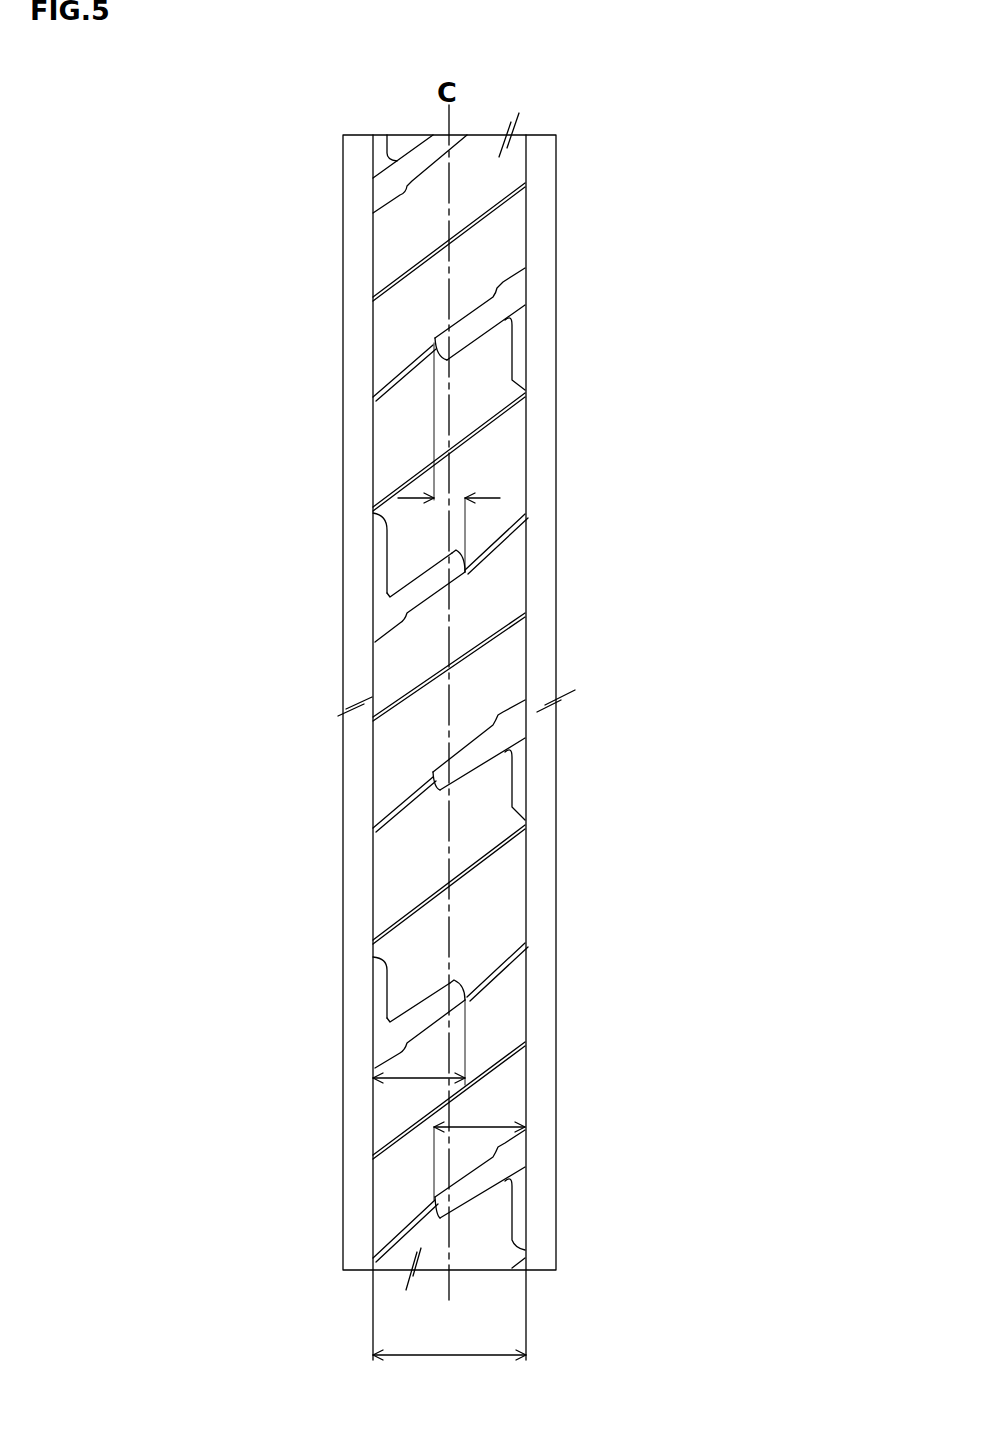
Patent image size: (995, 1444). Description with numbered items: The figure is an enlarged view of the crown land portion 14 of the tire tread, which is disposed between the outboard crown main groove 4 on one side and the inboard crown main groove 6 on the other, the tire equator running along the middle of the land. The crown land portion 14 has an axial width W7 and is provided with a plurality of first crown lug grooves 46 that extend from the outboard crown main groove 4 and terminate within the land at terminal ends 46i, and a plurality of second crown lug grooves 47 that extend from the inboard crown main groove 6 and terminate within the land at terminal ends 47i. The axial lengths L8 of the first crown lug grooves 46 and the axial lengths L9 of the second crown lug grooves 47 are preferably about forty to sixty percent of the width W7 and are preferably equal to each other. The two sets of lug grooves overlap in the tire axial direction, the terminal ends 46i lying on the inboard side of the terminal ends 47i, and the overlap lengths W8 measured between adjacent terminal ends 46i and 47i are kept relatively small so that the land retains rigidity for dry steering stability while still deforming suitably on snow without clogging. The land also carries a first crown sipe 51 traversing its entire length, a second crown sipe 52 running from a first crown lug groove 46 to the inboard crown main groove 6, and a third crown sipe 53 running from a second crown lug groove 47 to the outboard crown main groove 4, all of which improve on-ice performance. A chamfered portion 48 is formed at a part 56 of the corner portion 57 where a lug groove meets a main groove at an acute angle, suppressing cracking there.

The outboard crown main groove 4 is at (359, 168).
The inboard crown main groove 6 is at (539, 170).
The crown land portion 14 is at (476, 188).
The first crown lug grooves 46 is at (403, 173).
The terminal ends of the first crown lug grooves 46i is at (467, 570).
The second crown lug grooves 47 is at (483, 318).
The terminal ends of the second crown lug grooves 47i is at (433, 345).
The chamfered portion 48 is at (517, 350).
The first crown sipe 51 is at (480, 228).
The second crown sipe 52 is at (512, 517).
The third crown sipe 53 is at (397, 378).
The part of the corner portion 56 is at (398, 576).
The corner portion 57 is at (373, 503).
The axial width of the crown land portion W7 is at (449, 1338).
The overlap lengths W8 is at (458, 493).
The axial lengths of the first crown lug grooves L8 is at (410, 1083).
The axial lengths of the second crown lug grooves L9 is at (483, 1120).